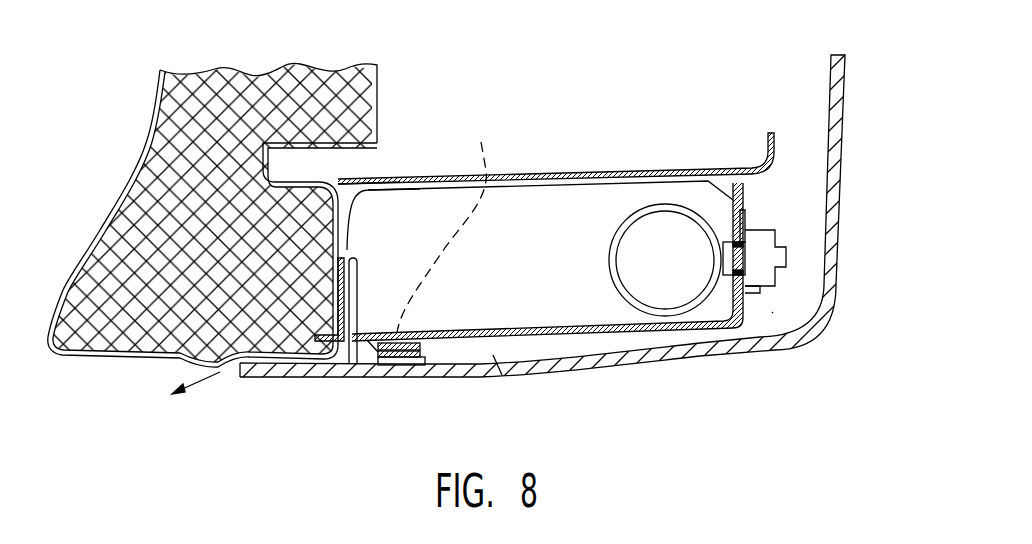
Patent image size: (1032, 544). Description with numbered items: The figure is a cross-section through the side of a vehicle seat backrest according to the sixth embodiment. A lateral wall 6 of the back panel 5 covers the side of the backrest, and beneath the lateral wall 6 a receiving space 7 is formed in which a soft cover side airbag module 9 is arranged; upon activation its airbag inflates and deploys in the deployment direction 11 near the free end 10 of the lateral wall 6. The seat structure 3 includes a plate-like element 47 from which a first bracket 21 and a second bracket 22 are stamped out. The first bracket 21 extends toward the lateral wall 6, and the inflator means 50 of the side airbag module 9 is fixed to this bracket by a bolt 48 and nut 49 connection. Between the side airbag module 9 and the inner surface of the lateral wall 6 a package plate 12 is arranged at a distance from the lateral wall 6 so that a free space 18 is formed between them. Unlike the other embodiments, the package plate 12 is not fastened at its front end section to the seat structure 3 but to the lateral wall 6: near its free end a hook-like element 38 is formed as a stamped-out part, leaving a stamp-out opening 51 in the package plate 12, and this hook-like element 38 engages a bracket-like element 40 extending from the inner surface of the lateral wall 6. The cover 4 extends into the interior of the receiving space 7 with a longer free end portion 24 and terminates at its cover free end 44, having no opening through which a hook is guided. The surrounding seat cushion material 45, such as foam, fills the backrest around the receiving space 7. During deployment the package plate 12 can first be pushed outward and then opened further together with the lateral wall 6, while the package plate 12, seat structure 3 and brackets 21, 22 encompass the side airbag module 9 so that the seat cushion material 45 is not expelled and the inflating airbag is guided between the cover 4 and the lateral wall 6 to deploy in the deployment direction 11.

The seat structure 3 is at (583, 258).
The cover 4 is at (130, 360).
The back panel 5 is at (845, 146).
The lateral wall 6 is at (533, 364).
The receiving space 7 is at (772, 313).
The soft cover side airbag module 9 is at (546, 275).
The free end of lateral wall 10 is at (240, 366).
The deployment direction 11 is at (207, 381).
The package plate 12 is at (692, 330).
The free space 18 is at (502, 375).
The first bracket 21 is at (732, 226).
The second bracket 22 is at (312, 341).
The free end portion 24 is at (352, 318).
The hook-like element 38 is at (400, 366).
The bracket-like element 40 is at (425, 350).
The cover free end 44 is at (345, 247).
The seat cushion material 45 is at (228, 95).
The plate-like element 47 is at (557, 171).
The bolt 48 is at (787, 257).
The nut 49 is at (762, 280).
The inflator means 50 is at (658, 204).
The stamp-out opening 51 is at (446, 225).